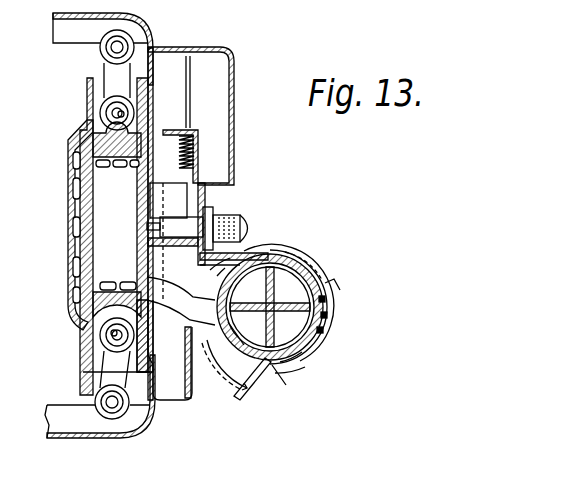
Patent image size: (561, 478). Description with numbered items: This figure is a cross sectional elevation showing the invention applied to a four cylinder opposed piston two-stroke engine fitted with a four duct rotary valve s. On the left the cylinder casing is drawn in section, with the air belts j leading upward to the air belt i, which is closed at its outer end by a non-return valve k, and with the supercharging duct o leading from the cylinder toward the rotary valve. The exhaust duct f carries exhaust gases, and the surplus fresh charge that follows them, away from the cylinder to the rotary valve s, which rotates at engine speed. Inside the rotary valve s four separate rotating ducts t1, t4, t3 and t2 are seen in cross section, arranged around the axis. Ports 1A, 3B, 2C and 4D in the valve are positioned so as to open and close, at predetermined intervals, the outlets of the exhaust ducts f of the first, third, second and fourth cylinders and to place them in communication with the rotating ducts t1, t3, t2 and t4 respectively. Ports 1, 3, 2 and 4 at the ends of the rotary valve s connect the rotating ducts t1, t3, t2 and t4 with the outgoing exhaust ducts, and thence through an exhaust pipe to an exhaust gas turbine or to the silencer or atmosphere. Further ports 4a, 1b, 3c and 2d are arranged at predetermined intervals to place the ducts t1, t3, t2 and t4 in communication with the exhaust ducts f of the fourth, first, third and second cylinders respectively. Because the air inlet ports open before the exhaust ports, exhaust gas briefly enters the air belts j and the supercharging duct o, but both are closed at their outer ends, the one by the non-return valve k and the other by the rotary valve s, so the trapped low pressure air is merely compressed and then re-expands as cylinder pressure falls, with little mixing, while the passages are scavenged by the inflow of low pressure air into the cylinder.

The air belt i is at (214, 113).
The air belts j is at (152, 160).
The non-return valve k is at (197, 154).
The supercharging duct o is at (152, 250).
The exhaust duct f is at (172, 292).
The port 1 is at (186, 282).
The port 1A is at (240, 254).
The port 1b is at (210, 334).
The port 4a is at (228, 248).
The port 4 is at (292, 274).
The port 4D is at (331, 297).
The port 2 is at (328, 330).
The port 2d is at (318, 284).
The port 2C is at (316, 347).
The rotary valve s is at (326, 317).
The port 3 is at (245, 367).
The port 3B is at (235, 348).
The port 3c is at (296, 376).
The rotating duct t1 is at (241, 293).
The rotating duct t2 is at (289, 331).
The rotating duct t3 is at (241, 331).
The rotating duct t4 is at (289, 293).